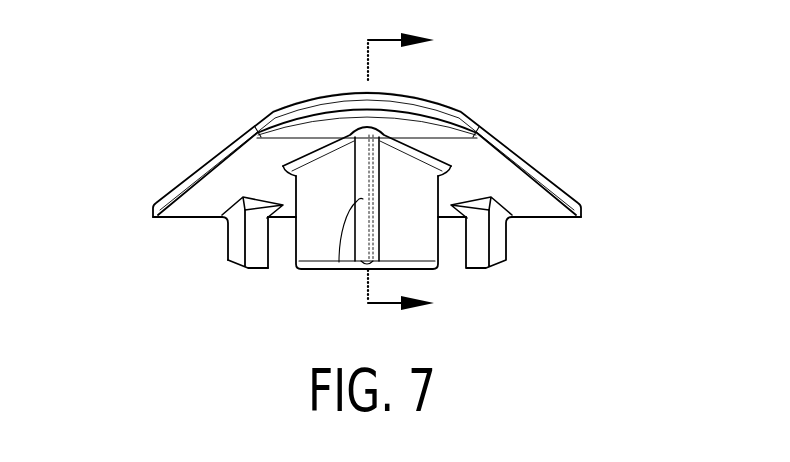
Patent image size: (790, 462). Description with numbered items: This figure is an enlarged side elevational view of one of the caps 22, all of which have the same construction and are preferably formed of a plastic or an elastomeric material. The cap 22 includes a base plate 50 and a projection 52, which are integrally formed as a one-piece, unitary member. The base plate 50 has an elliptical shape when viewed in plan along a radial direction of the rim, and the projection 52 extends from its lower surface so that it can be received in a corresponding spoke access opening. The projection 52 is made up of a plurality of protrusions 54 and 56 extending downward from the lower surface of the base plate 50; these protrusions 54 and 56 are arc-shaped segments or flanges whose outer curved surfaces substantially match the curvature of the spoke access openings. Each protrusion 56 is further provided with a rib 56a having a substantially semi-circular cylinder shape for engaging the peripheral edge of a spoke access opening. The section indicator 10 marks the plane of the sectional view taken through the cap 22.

The section line 10 is at (426, 173).
The arched top surface of cap 22 is at (542, 149).
The cap 50 is at (199, 163).
The hook base 52 is at (233, 270).
The hooks 54 is at (227, 245).
The central boss 56 is at (323, 270).
The slot 56a is at (343, 270).